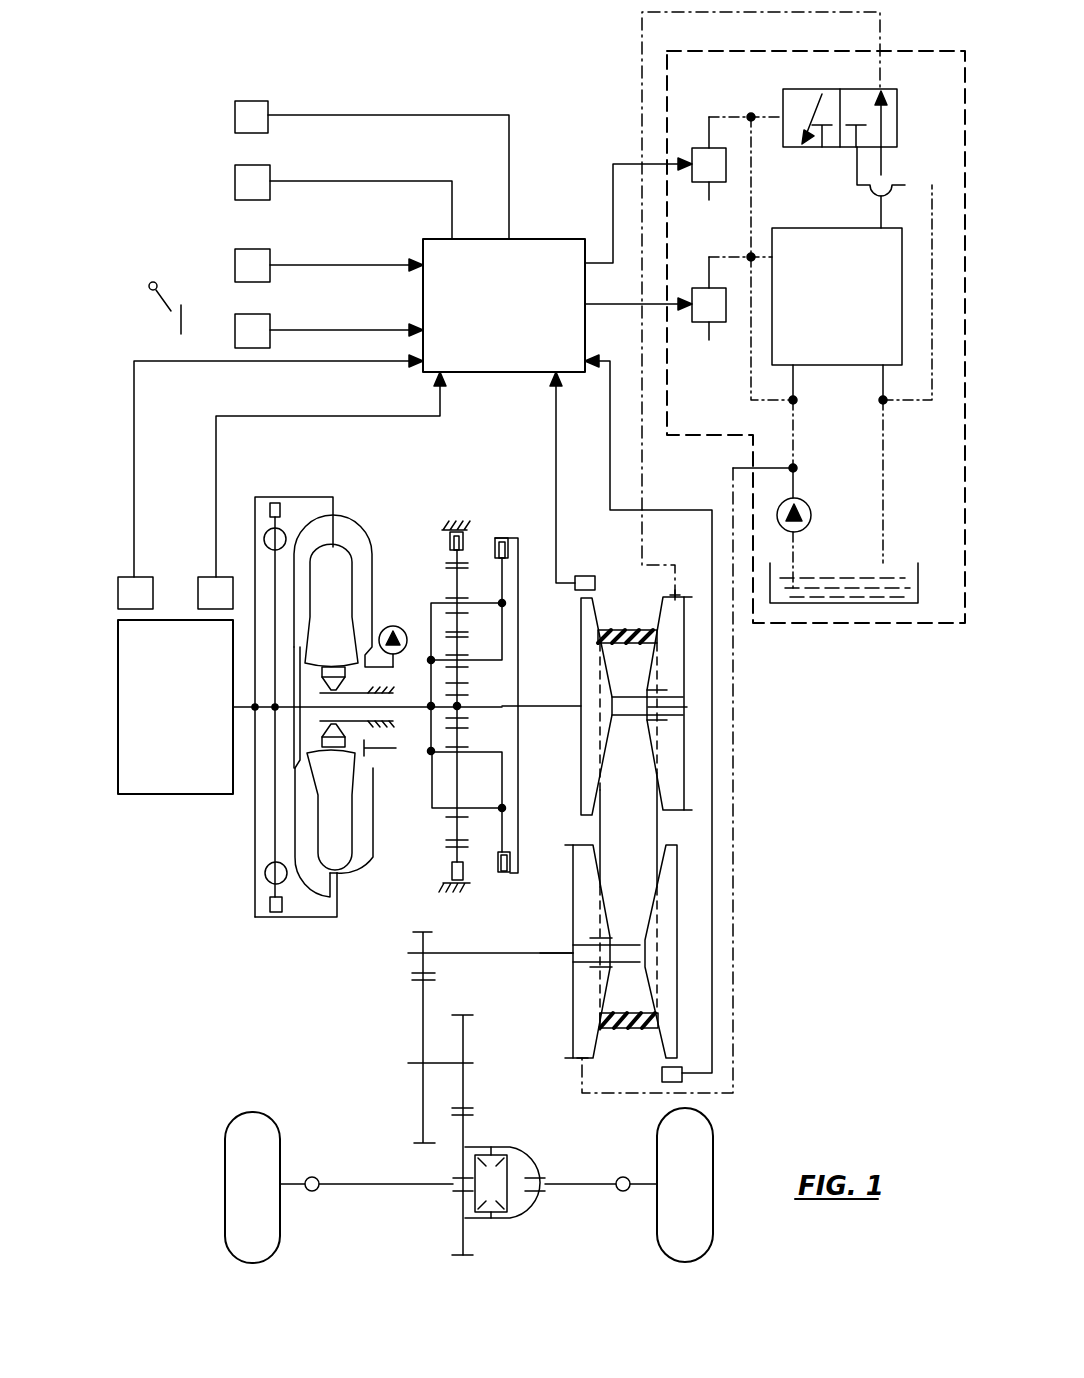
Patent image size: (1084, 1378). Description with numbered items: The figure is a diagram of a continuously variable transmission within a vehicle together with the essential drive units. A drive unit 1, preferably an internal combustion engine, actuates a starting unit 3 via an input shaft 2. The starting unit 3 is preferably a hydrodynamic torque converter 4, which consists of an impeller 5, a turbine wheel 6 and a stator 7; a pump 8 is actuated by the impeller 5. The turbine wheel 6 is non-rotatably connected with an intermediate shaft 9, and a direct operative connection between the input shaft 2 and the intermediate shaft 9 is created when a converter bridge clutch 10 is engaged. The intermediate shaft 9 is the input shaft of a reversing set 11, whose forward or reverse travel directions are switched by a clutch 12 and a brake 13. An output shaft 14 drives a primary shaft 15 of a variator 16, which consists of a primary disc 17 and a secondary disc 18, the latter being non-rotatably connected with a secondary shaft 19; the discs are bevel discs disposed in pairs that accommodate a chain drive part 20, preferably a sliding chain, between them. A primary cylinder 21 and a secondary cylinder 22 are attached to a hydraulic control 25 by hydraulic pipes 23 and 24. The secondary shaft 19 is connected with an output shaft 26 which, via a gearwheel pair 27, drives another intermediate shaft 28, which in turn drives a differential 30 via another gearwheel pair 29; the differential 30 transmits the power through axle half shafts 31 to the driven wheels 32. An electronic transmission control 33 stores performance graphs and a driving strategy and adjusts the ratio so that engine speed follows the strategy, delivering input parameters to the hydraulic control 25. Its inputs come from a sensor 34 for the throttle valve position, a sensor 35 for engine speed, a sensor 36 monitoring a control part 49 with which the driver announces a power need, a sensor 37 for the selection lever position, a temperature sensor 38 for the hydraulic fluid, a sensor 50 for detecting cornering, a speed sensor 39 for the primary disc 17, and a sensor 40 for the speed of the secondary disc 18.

The drive unit 1 is at (184, 716).
The input shaft 2 is at (245, 709).
The starting unit 3 is at (330, 930).
The hydrodynamic torque converter 4 is at (340, 855).
The impeller 5 is at (346, 532).
The turbine wheel 6 is at (308, 535).
The stator 7 is at (330, 640).
The pump 8 is at (388, 627).
The intermediate shaft 9 is at (412, 742).
The converter bridge clutch 10 is at (277, 914).
The reversing set 11 is at (478, 516).
The switching element (clutch) 12 is at (510, 872).
The switching element (brake) 13 is at (463, 890).
The output shaft 14 is at (562, 705).
The primary shaft 15 is at (652, 705).
The variator 16 is at (650, 805).
The primary disc 17 is at (590, 715).
The secondary disc 18 is at (662, 892).
The secondary shaft 19 is at (623, 950).
The chain drive part 20 is at (630, 1013).
The primary cylinder 21 is at (673, 652).
The secondary cylinder 22 is at (585, 1018).
The hydraulic pipe 23 is at (645, 482).
The hydraulic pipe 24 is at (737, 1073).
The hydraulic control 25 is at (902, 50).
The output shaft 26 is at (518, 953).
The gearwheel pair 27 is at (403, 1025).
The intermediate shaft 28 is at (440, 1063).
The gearwheel pair 29 is at (488, 1106).
The differential 30 is at (500, 1223).
The axle half shafts 31 is at (358, 1186).
The driven wheels 32 is at (265, 1242).
The electronic transmission control (ESC) 33 is at (519, 315).
The sensor 34 is at (210, 585).
The sensor 35 is at (132, 585).
The sensor 36 is at (250, 325).
The sensor 37 is at (250, 258).
The temperature sensor 38 is at (248, 179).
The speed sensor 39 is at (590, 576).
The sensor 40 is at (672, 1070).
The control part 49 is at (158, 312).
The sensor 50 is at (253, 108).